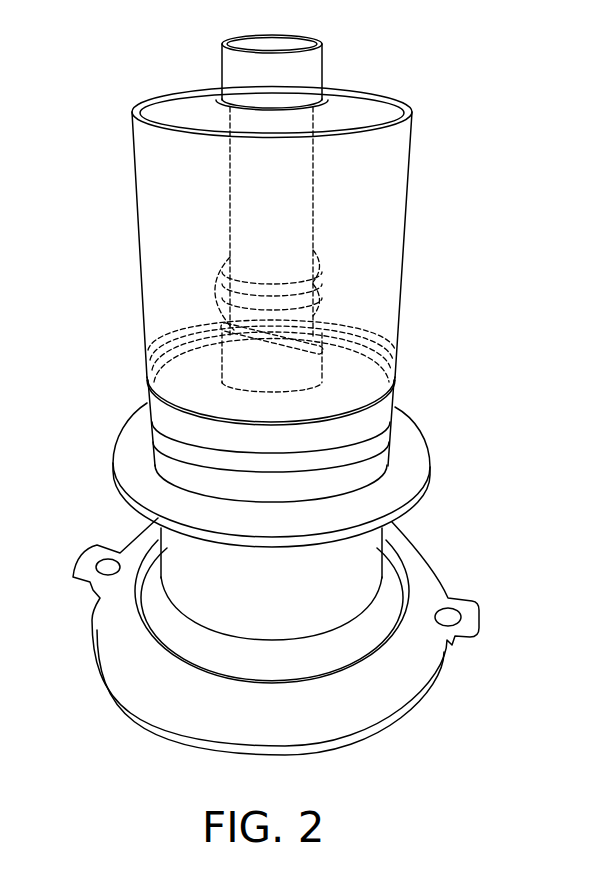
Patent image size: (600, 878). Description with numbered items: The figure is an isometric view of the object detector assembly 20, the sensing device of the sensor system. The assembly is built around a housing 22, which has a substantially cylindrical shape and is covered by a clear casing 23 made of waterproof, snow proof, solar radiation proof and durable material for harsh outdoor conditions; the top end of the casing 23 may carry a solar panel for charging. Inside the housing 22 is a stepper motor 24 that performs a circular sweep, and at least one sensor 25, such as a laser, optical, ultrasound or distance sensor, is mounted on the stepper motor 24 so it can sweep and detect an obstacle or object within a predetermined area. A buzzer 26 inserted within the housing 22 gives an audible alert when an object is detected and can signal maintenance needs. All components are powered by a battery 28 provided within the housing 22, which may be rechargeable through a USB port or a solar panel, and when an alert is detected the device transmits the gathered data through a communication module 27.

The object detector assembly 20 is at (368, 90).
The housing 22 is at (385, 553).
The casing 23 is at (182, 88).
The stepper motor 24 is at (285, 198).
The sensor 25 is at (207, 302).
The buzzer 26 is at (208, 386).
The communication module 27 is at (317, 350).
The battery 28 is at (220, 552).